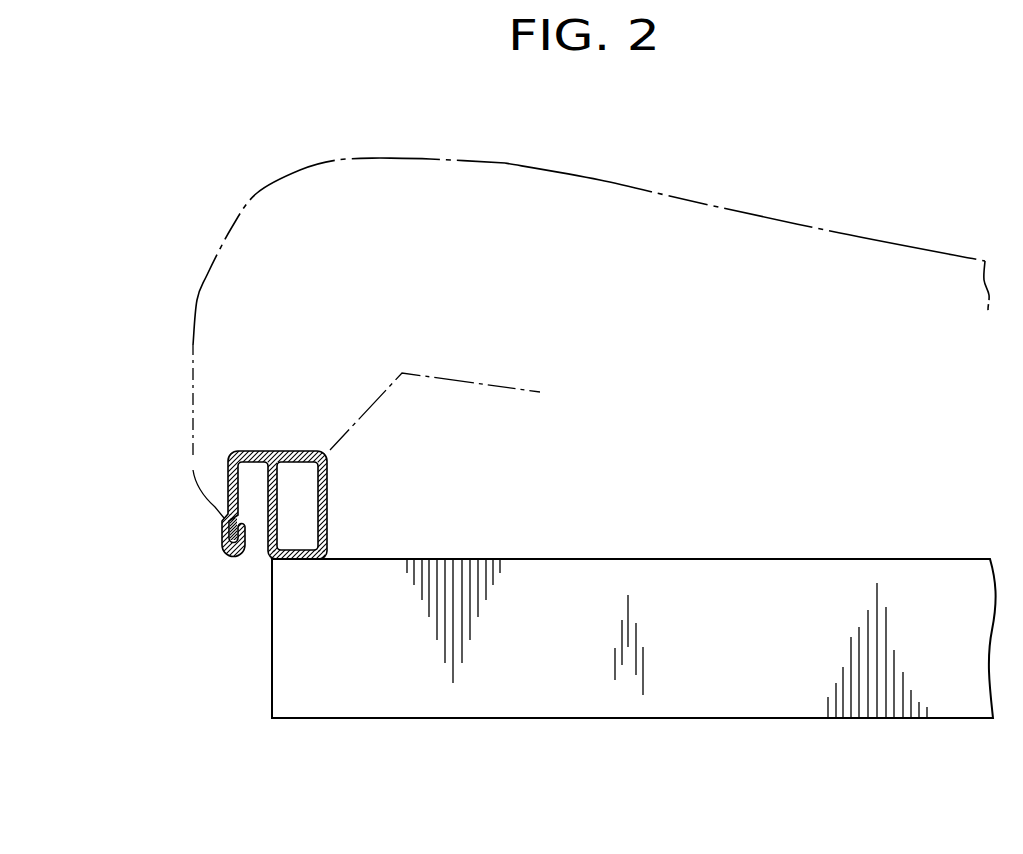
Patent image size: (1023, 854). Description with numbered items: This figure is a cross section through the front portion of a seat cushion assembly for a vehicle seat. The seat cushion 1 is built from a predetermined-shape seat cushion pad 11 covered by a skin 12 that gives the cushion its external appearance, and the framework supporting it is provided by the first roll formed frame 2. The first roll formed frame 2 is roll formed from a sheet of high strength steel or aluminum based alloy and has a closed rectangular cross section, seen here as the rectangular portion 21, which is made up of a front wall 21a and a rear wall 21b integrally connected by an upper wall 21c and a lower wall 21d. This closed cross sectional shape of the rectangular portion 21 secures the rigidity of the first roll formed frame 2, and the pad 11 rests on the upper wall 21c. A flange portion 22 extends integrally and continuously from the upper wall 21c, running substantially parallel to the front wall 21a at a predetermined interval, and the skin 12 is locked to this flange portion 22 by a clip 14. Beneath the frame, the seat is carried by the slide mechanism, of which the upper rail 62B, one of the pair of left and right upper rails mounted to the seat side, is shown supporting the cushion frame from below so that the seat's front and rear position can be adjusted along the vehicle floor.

The seat cushion 1 is at (250, 186).
The seat cushion pad 11 is at (382, 212).
The skin 12 is at (507, 162).
The first roll formed frame 2 is at (342, 487).
The clip 14 is at (225, 548).
The rectangular portion 21 is at (280, 446).
The front wall 21a is at (268, 522).
The rear wall 21b is at (328, 532).
The upper wall 21c is at (307, 451).
The lower wall 21d is at (298, 560).
The flange portion 22 is at (228, 485).
The upper rail 62B is at (579, 700).